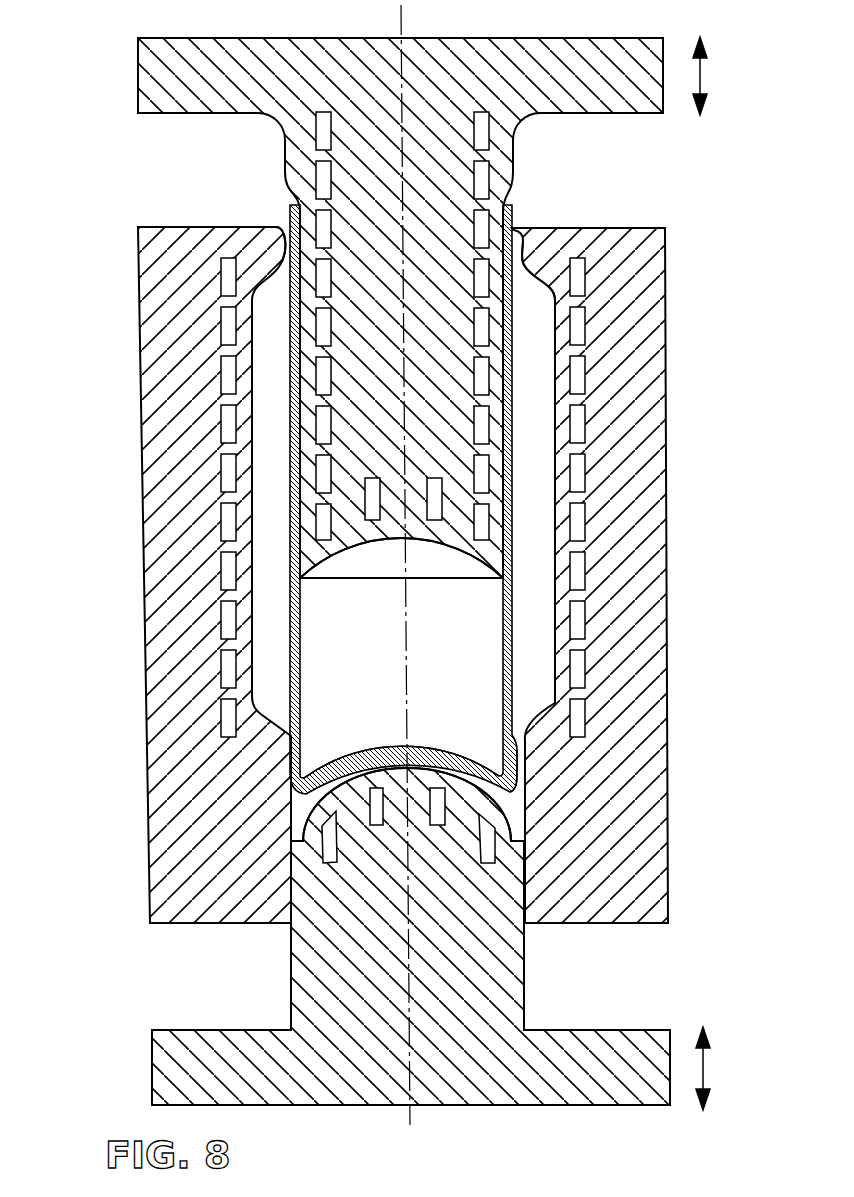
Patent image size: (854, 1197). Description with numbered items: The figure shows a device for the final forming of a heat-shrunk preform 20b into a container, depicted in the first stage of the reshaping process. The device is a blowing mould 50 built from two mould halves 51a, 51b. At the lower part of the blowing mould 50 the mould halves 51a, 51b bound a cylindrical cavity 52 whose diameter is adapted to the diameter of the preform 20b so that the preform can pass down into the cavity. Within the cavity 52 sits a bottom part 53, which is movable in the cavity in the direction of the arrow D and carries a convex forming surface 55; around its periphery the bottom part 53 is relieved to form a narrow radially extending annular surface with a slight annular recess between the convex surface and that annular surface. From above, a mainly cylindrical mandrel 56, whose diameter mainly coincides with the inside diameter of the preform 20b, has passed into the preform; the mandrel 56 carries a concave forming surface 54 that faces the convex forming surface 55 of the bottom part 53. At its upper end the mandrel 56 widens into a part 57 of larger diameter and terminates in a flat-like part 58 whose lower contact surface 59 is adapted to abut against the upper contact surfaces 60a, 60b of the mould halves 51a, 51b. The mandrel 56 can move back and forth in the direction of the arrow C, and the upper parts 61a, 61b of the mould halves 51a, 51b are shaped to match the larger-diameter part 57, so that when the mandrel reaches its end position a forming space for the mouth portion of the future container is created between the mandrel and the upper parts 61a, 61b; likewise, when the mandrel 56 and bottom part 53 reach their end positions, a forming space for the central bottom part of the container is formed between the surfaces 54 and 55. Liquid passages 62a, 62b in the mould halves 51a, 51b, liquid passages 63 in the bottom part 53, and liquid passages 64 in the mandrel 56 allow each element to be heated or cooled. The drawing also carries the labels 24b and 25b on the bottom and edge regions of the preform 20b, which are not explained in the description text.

The blowing mould 50 is at (408, 564).
The mould half 51a is at (193, 374).
The mould half 51b is at (637, 368).
The cylindrical cavity 52 is at (445, 919).
The bottom part 53 is at (507, 980).
The concave forming surface 54 is at (503, 557).
The convex forming surface 55 is at (510, 805).
The mandrel 56 is at (522, 501).
The part of larger diameter 57 is at (438, 291).
The flat-like part 58 is at (475, 60).
The lower contact surface 59 is at (630, 113).
The upper contact surface 60a is at (176, 552).
The upper contact surface 60b is at (633, 558).
The upper part 61a is at (283, 246).
The upper part 61b is at (525, 250).
The liquid passages 62a is at (228, 467).
The liquid passages 62b is at (580, 380).
The liquid passages 63 is at (490, 848).
The liquid passages 64 is at (485, 422).
The preform 20b is at (508, 624).
The can bottom dome 24b is at (364, 750).
The can bottom chime 25b is at (512, 798).